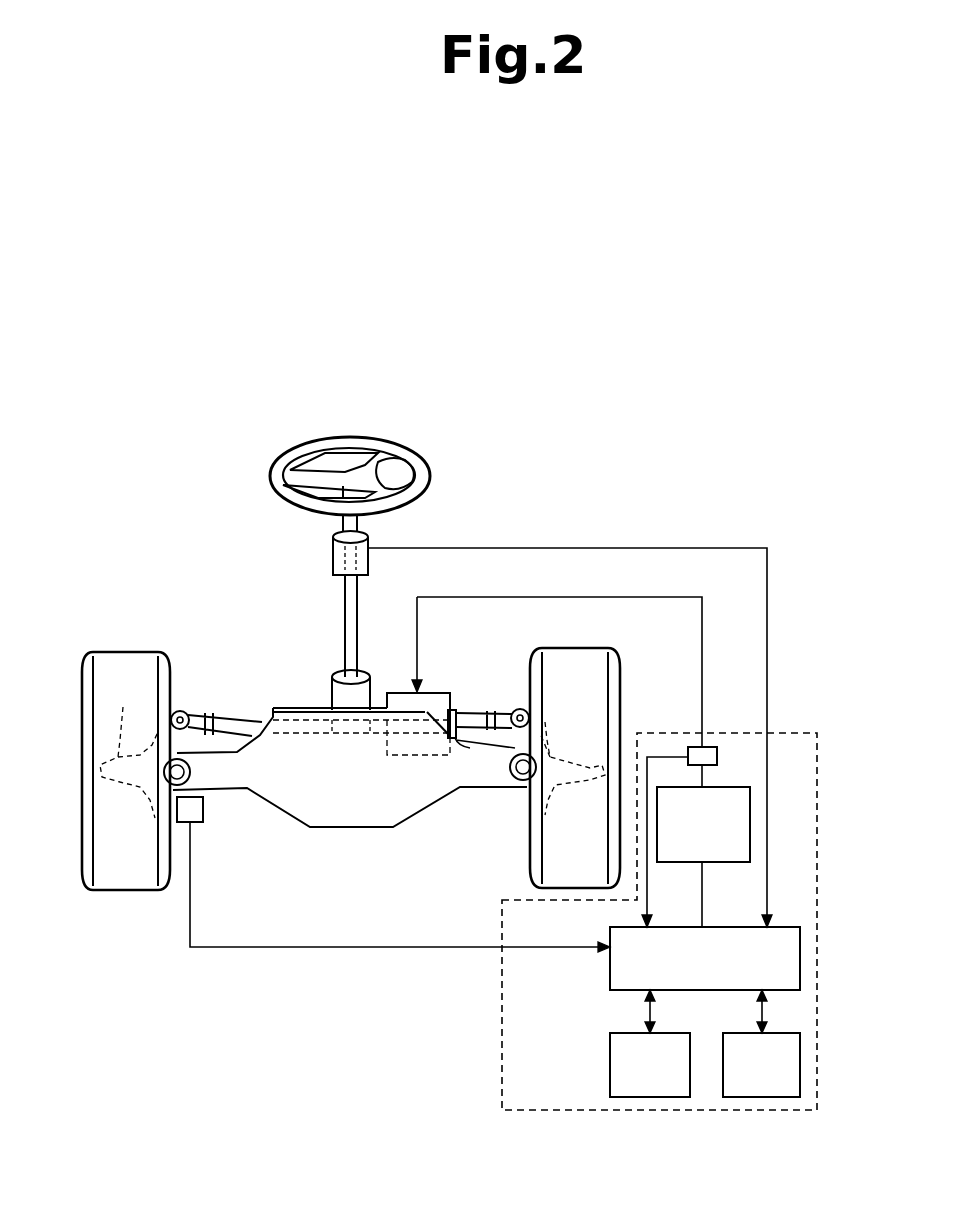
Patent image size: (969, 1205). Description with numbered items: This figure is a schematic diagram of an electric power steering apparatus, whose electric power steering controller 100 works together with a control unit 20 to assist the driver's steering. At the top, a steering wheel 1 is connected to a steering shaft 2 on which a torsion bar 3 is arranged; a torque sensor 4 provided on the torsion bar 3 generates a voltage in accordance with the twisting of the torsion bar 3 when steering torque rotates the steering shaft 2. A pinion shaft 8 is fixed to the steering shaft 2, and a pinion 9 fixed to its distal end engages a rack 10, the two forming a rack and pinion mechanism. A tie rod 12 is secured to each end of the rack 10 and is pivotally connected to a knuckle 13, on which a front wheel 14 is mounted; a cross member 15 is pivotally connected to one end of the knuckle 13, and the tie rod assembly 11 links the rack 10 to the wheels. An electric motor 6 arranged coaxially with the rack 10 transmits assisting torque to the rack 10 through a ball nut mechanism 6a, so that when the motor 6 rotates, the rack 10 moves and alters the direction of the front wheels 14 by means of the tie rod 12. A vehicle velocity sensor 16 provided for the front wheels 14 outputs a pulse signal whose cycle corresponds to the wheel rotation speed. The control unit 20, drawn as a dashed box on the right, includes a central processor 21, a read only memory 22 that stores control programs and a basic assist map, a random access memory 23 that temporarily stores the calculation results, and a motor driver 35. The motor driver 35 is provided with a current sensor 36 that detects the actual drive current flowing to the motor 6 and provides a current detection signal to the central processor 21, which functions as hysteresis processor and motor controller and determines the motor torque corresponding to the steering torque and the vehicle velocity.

The steering wheel 1 is at (425, 455).
The steering shaft 2 is at (368, 530).
The torsion bar 3 is at (326, 545).
The torque sensor 4 is at (333, 556).
The electric motor 6 is at (452, 697).
The ball nut mechanism 6a is at (462, 740).
The pinion shaft 8 is at (347, 655).
The pinion 9 is at (333, 702).
The rack 10 is at (278, 748).
The tie rod 11 is at (243, 716).
The tie rod 12 is at (185, 712).
The knuckle 13 is at (352, 745).
The front wheel tire 14 is at (82, 740).
The cross member 15 is at (285, 815).
The vehicle velocity sensor 16 is at (204, 810).
The control unit 20 is at (792, 733).
The central processor (CPU) 21 is at (612, 930).
The read only memory (ROM) 22 is at (790, 1097).
The random access memory (RAM) 23 is at (680, 1097).
The motor driver 35 is at (728, 862).
The current sensor 36 is at (694, 745).
The electric power steering controller 100 is at (699, 503).